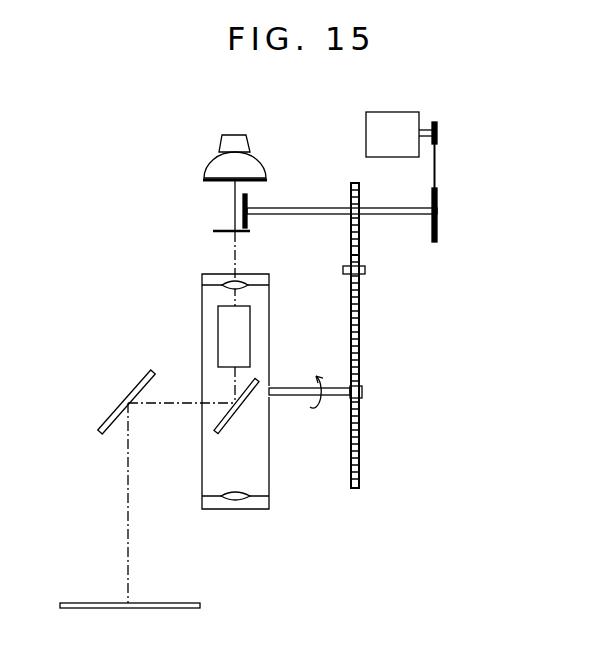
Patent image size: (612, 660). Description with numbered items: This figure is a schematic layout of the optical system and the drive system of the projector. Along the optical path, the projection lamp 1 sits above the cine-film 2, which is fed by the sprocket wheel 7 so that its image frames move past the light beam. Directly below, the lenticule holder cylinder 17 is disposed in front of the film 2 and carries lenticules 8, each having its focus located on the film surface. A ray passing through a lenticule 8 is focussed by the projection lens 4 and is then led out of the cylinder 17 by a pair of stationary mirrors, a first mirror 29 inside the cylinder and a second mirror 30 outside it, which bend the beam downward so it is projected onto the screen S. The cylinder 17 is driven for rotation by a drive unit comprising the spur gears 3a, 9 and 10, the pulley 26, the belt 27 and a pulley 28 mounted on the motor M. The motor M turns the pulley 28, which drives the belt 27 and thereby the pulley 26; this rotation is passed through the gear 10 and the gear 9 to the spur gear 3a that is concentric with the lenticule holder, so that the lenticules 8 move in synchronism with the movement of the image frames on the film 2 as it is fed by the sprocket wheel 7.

The projection lamp 1 is at (258, 167).
The cine-film 2 is at (222, 229).
The sprocket wheel 7 is at (249, 203).
The motor M is at (368, 130).
The pulley 28 is at (440, 130).
The belt 27 is at (438, 161).
The pulley 26 is at (439, 216).
The spur gear 10 is at (350, 230).
The spur gear 3a is at (359, 458).
The spur gear 9 is at (359, 283).
The lenticule holder cylinder 17 is at (270, 445).
The lenticule 8 is at (222, 288).
The projection lens 4 is at (220, 333).
The stationary mirror 29 is at (218, 423).
The stationary mirror 30 is at (134, 395).
The screen S is at (176, 603).